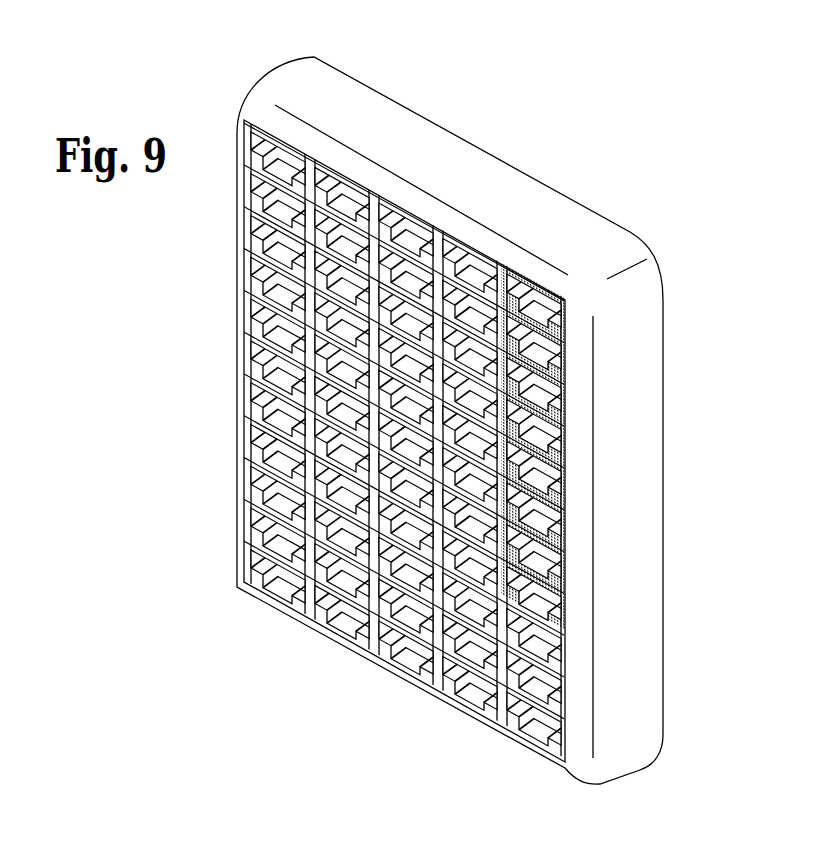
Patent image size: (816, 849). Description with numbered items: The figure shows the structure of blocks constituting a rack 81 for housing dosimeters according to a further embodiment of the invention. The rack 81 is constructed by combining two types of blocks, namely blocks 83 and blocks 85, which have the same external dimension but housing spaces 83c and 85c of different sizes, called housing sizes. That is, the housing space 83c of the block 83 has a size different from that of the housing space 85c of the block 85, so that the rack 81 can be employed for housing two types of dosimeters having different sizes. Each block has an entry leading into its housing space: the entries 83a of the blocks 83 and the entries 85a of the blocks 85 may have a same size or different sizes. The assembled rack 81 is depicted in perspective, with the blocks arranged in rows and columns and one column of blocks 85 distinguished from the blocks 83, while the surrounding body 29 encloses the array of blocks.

The rack 81 is at (587, 185).
The housing body 29 is at (637, 322).
The block 83 is at (410, 276).
The entry 83a is at (427, 262).
The housing space 83c is at (392, 270).
The block 85 is at (536, 601).
The entry 85a is at (565, 568).
The housing space 85c is at (565, 642).